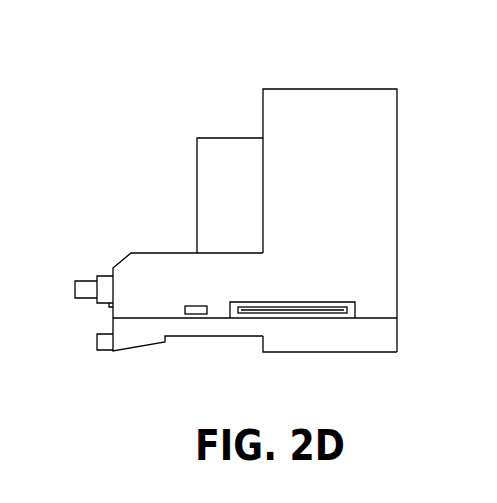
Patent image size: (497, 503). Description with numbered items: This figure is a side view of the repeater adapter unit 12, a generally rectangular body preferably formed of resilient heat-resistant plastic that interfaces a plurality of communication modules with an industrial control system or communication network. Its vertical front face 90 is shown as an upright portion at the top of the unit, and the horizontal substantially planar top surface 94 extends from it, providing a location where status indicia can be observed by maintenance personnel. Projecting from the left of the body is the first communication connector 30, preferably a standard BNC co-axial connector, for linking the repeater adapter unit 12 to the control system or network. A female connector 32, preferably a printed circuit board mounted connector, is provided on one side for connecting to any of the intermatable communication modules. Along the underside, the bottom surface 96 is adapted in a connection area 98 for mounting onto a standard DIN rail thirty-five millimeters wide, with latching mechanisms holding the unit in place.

The repeater adapter unit 12 is at (291, 46).
The first communication connector 30 is at (79, 281).
The female connector 32 is at (286, 286).
The vertical front face 90 is at (168, 142).
The top surface 94 is at (165, 253).
The bottom surface 96 is at (328, 352).
The connection area 98 is at (214, 349).